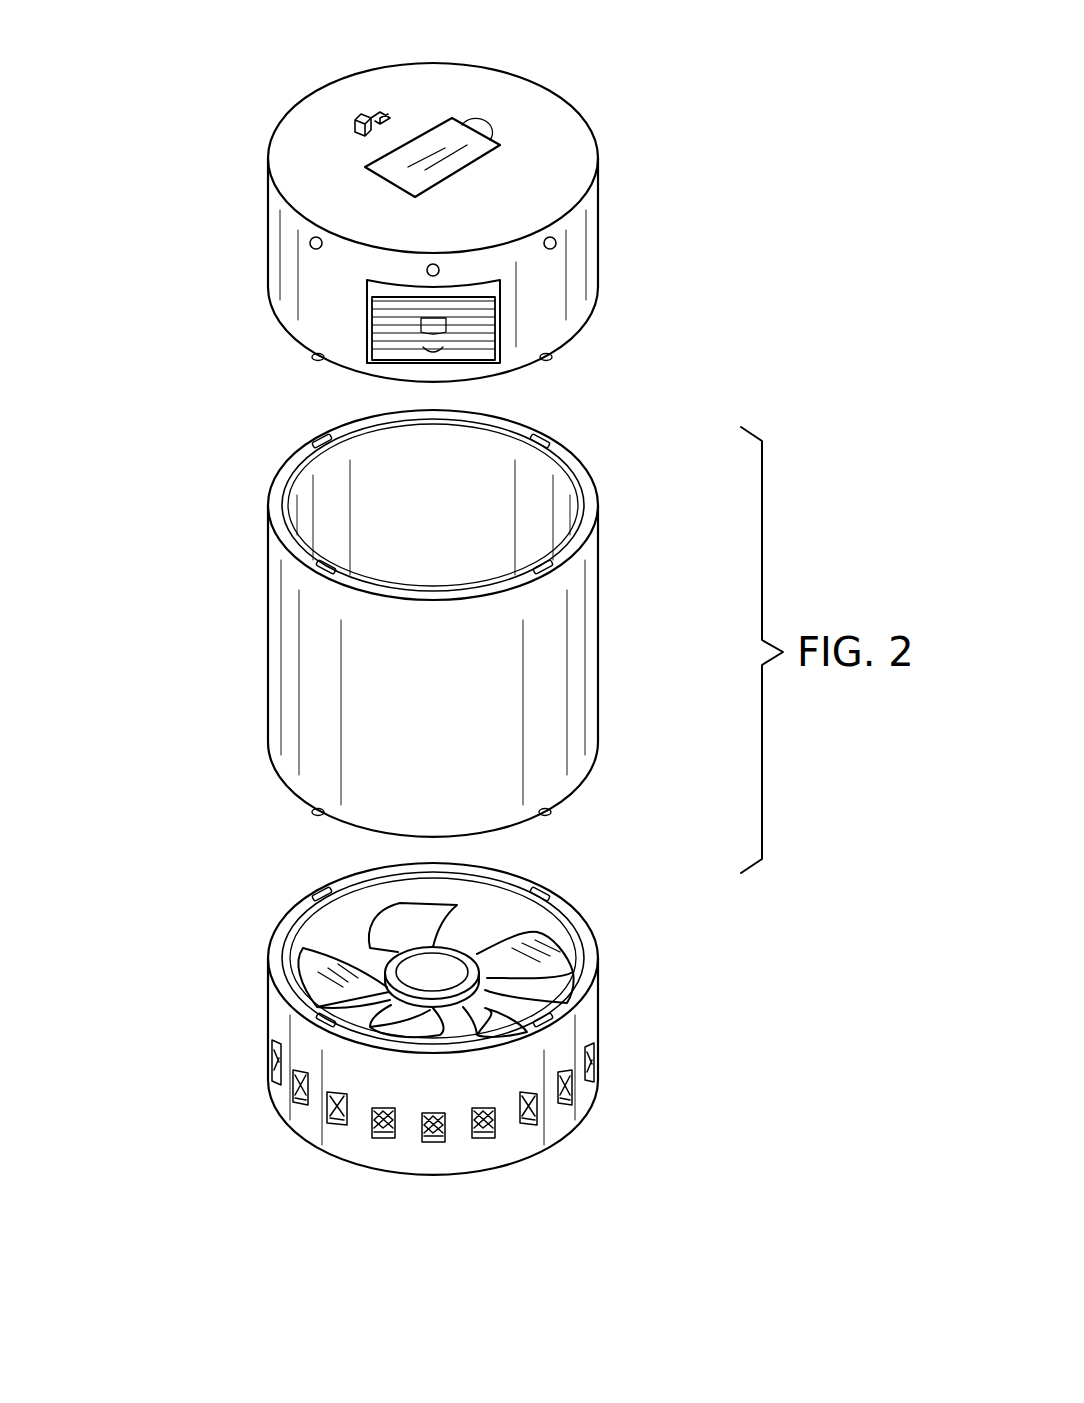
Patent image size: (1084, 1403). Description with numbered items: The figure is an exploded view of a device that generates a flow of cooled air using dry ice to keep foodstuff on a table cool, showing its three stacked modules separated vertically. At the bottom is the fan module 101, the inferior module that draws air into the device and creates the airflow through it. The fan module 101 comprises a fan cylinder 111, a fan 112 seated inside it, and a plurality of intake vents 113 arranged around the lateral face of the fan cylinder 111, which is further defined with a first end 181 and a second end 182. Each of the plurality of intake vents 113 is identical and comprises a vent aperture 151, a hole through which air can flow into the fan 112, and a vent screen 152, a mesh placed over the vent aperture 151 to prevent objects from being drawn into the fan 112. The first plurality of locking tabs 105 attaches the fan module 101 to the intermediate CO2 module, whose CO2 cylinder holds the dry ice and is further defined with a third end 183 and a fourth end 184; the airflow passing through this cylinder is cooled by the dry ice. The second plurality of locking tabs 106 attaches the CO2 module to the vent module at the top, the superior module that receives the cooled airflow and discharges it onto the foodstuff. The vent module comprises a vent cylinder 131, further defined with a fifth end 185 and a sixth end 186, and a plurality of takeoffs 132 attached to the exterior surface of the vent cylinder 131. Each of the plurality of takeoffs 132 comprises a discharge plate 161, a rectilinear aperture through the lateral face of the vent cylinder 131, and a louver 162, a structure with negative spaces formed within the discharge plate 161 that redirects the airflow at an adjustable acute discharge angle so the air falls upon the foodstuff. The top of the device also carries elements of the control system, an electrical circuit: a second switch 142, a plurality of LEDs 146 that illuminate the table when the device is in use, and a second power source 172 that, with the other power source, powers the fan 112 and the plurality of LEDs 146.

The fan module 101 is at (195, 1000).
The first plurality of locking tabs 105 is at (543, 887).
The second plurality of locking tabs 106 is at (322, 440).
The fan cylinder 111 is at (565, 1052).
The fan 112 is at (307, 968).
The plurality of intake vents 113 is at (483, 1138).
The vent cylinder 131 is at (592, 242).
The plurality of takeoffs 132 is at (500, 323).
The second switch 142 is at (353, 121).
The plurality of LEDs 146 is at (309, 243).
The vent aperture 151 is at (383, 1136).
The vent screen 152 is at (530, 1120).
The discharge plate 161 is at (500, 287).
The louver 162 is at (396, 335).
The second power source 172 is at (453, 137).
The first end 181 is at (318, 1148).
The second end 182 is at (360, 878).
The third end 183 is at (285, 785).
The fourth end 184 is at (590, 476).
The fifth end 185 is at (498, 374).
The sixth end 186 is at (541, 118).